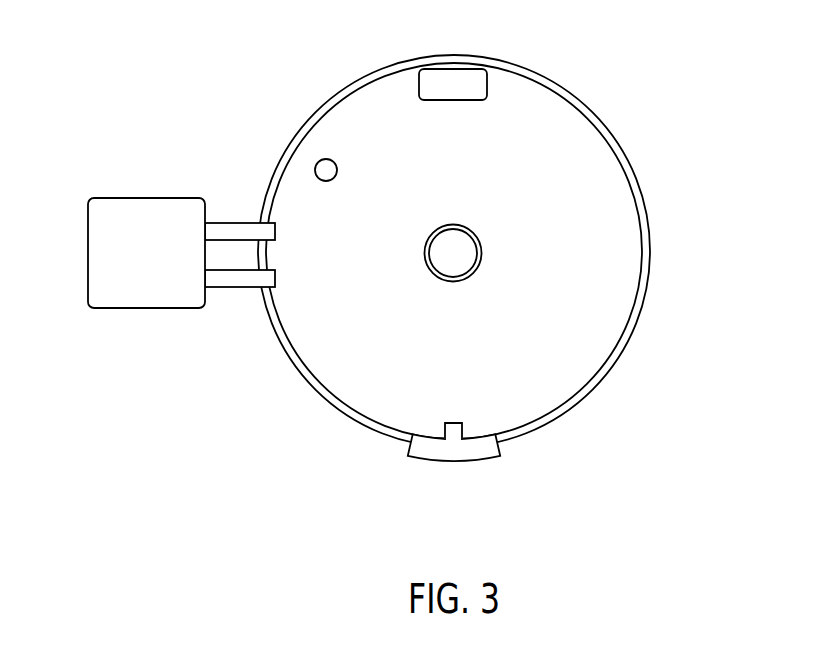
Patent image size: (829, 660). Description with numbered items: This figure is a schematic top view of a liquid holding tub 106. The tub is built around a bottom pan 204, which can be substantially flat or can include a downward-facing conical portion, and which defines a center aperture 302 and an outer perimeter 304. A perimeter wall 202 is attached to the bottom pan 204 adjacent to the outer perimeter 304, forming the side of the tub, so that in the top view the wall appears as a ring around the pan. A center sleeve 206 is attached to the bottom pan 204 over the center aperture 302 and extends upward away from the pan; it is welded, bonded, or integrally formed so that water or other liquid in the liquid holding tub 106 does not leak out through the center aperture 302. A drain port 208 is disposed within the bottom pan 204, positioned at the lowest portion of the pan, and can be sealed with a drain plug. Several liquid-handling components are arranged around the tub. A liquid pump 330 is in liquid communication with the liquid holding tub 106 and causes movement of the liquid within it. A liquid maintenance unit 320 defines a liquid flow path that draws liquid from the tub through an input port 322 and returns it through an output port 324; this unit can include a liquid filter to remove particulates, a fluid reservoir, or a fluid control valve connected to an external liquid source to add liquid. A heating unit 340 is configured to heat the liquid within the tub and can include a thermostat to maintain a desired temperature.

The liquid holding tub 106 is at (603, 98).
The perimeter wall 202 is at (622, 338).
The bottom pan 204 is at (337, 356).
The center sleeve 206 is at (465, 227).
The drain port 208 is at (318, 162).
The center aperture 302 is at (455, 252).
The outer perimeter 304 is at (643, 198).
The liquid maintenance unit 320 is at (120, 215).
The input port 322 is at (275, 232).
The output port 324 is at (275, 278).
The liquid pump 330 is at (465, 80).
The heating unit 340 is at (460, 458).